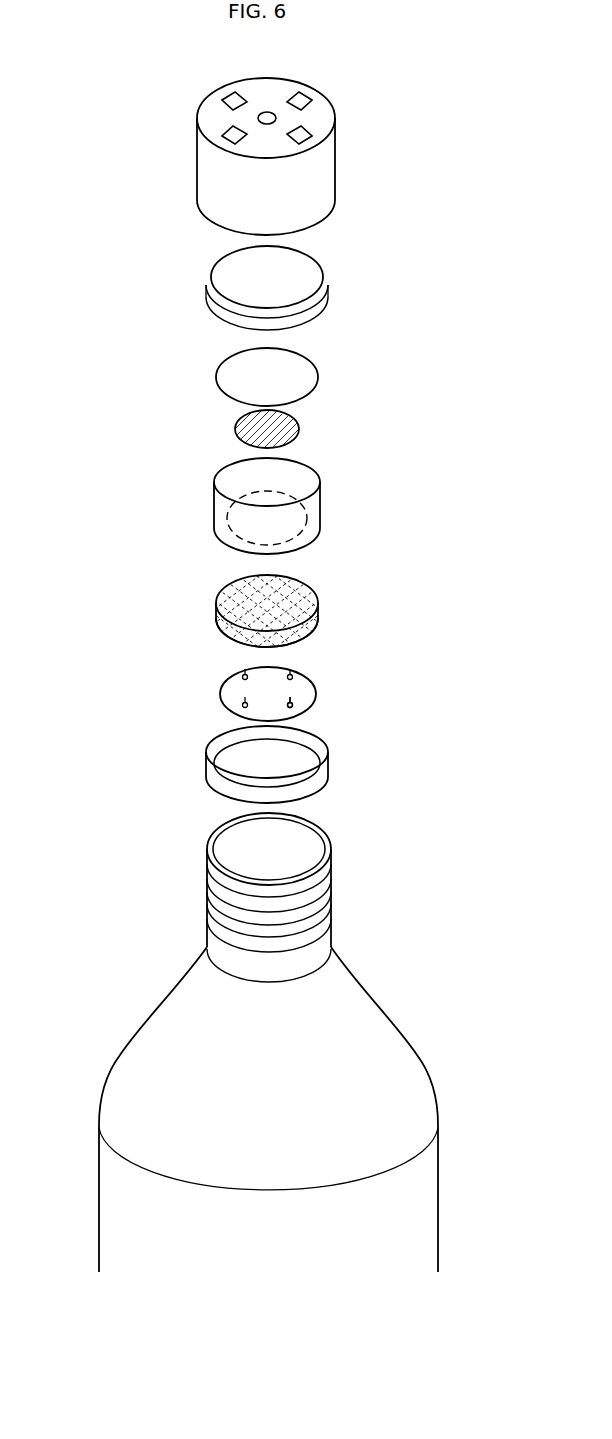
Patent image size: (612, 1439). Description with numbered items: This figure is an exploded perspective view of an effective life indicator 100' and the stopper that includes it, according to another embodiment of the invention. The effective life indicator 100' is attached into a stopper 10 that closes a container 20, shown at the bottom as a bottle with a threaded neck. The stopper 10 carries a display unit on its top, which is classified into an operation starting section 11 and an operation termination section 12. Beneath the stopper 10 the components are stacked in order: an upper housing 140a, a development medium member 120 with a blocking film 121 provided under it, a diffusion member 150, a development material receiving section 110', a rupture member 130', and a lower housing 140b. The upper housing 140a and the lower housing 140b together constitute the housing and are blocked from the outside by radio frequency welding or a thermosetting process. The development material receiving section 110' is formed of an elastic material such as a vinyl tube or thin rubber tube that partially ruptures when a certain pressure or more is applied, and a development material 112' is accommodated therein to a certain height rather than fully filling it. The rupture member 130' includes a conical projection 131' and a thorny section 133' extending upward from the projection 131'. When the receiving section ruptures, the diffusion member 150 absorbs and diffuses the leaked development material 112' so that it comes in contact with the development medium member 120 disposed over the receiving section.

The effective life indicator 100' is at (230, 425).
The stopper 10 is at (335, 163).
The operation starting section 11 is at (296, 136).
The operation termination section 12 is at (265, 113).
The upper housing 140a is at (323, 272).
The development medium member 120 is at (318, 377).
The blocking film 121 is at (298, 421).
The diffusion member 150 is at (320, 508).
The development material receiving section 110' is at (302, 618).
The development material 112' is at (240, 632).
The rupture member 130' is at (324, 694).
The thorny section 133' is at (330, 674).
The projection 131' is at (358, 724).
The lower housing 140b is at (328, 773).
The container 20 is at (377, 1008).